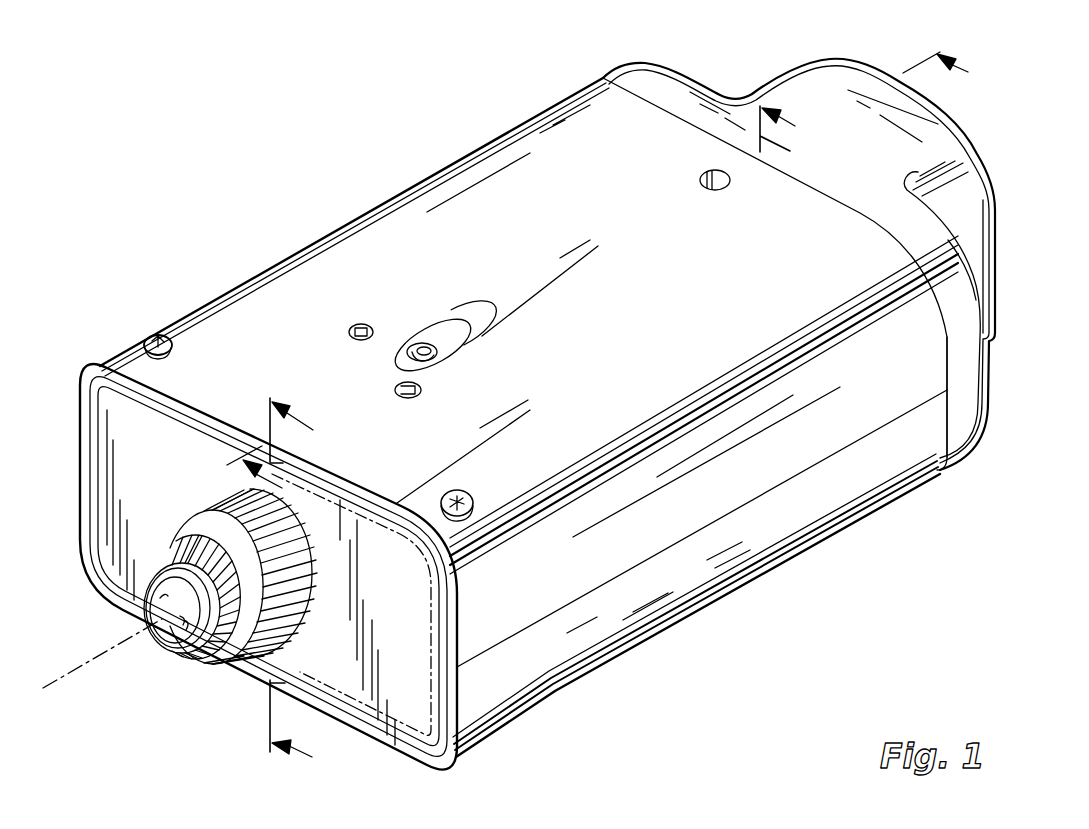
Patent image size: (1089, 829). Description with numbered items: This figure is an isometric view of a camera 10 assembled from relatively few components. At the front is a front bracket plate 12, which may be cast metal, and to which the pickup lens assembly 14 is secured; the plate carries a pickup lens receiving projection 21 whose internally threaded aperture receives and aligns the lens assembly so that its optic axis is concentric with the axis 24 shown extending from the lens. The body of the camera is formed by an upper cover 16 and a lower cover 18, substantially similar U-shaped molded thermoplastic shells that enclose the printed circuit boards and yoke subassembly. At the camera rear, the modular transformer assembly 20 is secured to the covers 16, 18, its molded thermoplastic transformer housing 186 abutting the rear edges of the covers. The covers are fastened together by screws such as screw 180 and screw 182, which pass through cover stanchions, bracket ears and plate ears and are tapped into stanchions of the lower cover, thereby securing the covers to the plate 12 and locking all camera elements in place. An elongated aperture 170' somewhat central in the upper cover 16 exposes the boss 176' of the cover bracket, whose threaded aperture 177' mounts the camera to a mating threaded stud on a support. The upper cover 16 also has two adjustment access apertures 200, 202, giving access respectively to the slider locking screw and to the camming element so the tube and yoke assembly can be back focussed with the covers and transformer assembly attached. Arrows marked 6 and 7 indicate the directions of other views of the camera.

The camera 10 is at (1016, 298).
The front bracket plate 12 is at (447, 762).
The pickup lens assembly 14 is at (186, 655).
The upper cover 16 is at (337, 242).
The lower cover 18 is at (594, 661).
The transformer assembly 20 is at (1000, 159).
The pickup lens receiving projection 21 is at (305, 596).
The axis 24 is at (78, 666).
The elongated aperture 170' is at (444, 340).
The boss 176' is at (486, 327).
The threaded aperture 177' is at (390, 358).
The screw 180 is at (466, 500).
The screw 182 is at (174, 348).
The transformer housing 186 is at (993, 213).
The adjustment access aperture 200 is at (368, 331).
The adjustment access aperture 202 is at (422, 391).
The section line 6 is at (608, 279).
The section line 7 is at (543, 440).